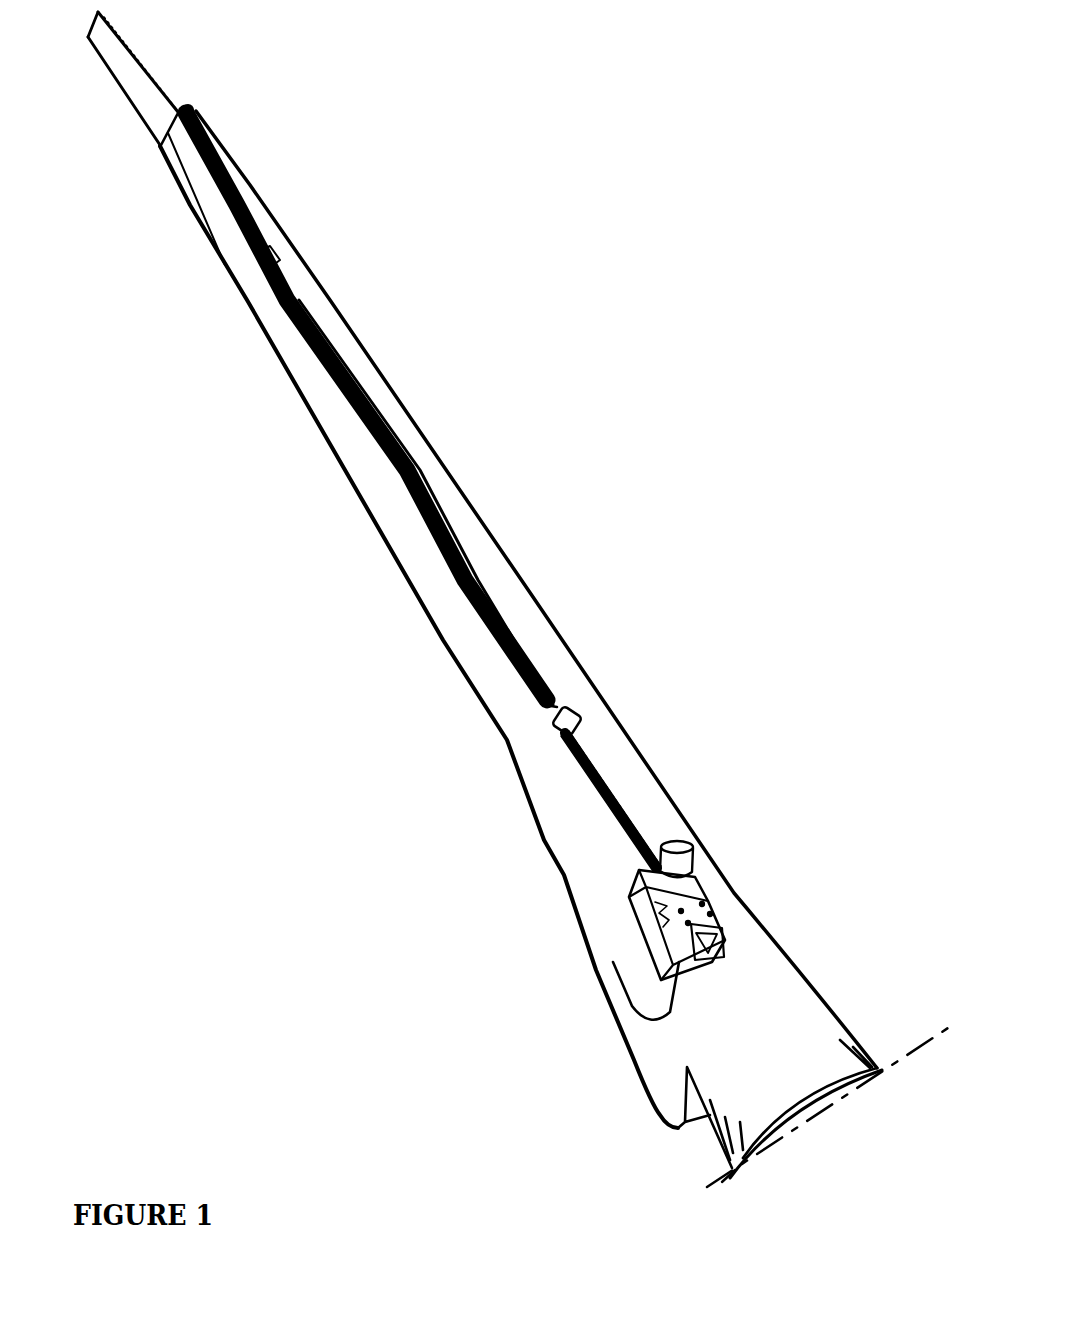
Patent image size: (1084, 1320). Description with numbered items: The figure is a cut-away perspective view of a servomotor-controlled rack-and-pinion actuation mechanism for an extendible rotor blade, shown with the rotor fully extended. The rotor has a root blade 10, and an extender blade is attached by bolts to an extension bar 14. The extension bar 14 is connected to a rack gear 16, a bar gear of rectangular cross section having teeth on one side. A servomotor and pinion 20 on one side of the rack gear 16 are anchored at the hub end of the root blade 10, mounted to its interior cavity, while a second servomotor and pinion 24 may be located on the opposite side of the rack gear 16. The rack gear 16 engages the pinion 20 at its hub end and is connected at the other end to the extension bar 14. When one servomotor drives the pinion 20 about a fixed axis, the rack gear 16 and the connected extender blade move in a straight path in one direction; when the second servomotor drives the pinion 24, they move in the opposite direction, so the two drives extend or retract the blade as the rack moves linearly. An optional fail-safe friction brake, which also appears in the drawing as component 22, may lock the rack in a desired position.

The root blade 10 is at (772, 1027).
The extension bar 14 is at (397, 443).
The rack gear 16 is at (593, 757).
The pinion 20 is at (618, 992).
The battery / cylindrical body 22 is at (650, 1007).
The pinion 24 is at (667, 840).